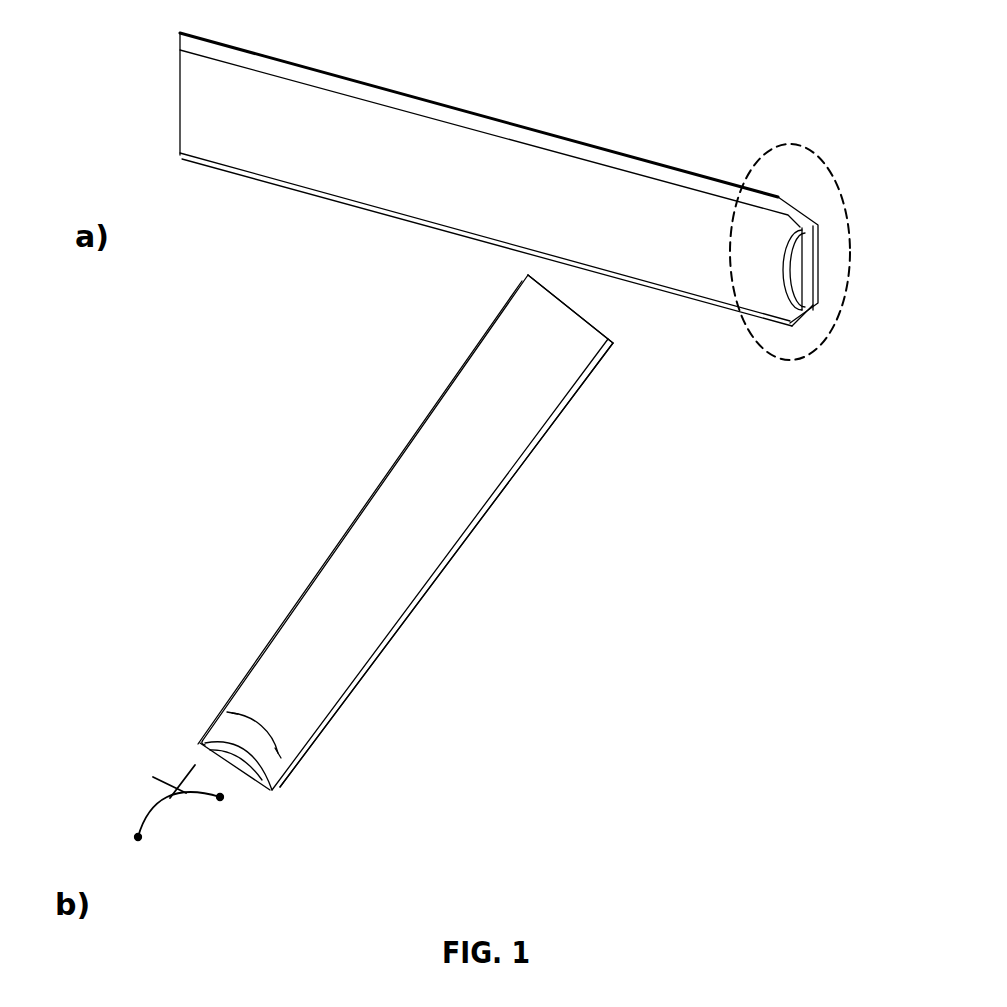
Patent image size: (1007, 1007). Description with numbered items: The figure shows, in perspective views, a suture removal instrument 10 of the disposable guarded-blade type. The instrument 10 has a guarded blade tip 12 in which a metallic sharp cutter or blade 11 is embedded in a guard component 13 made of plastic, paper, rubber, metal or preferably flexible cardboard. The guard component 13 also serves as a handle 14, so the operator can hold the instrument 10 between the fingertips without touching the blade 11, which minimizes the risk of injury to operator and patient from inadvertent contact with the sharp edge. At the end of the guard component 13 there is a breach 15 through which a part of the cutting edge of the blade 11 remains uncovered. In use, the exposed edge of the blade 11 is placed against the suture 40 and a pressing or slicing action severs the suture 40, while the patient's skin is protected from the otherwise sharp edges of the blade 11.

The suture removal instrument 10 is at (748, 127).
The blade 11 is at (810, 273).
The guarded blade tip 12 is at (827, 160).
The guard component 13 is at (782, 305).
The handle 14 is at (410, 133).
The breach 15 is at (262, 730).
The suture 40 is at (153, 812).